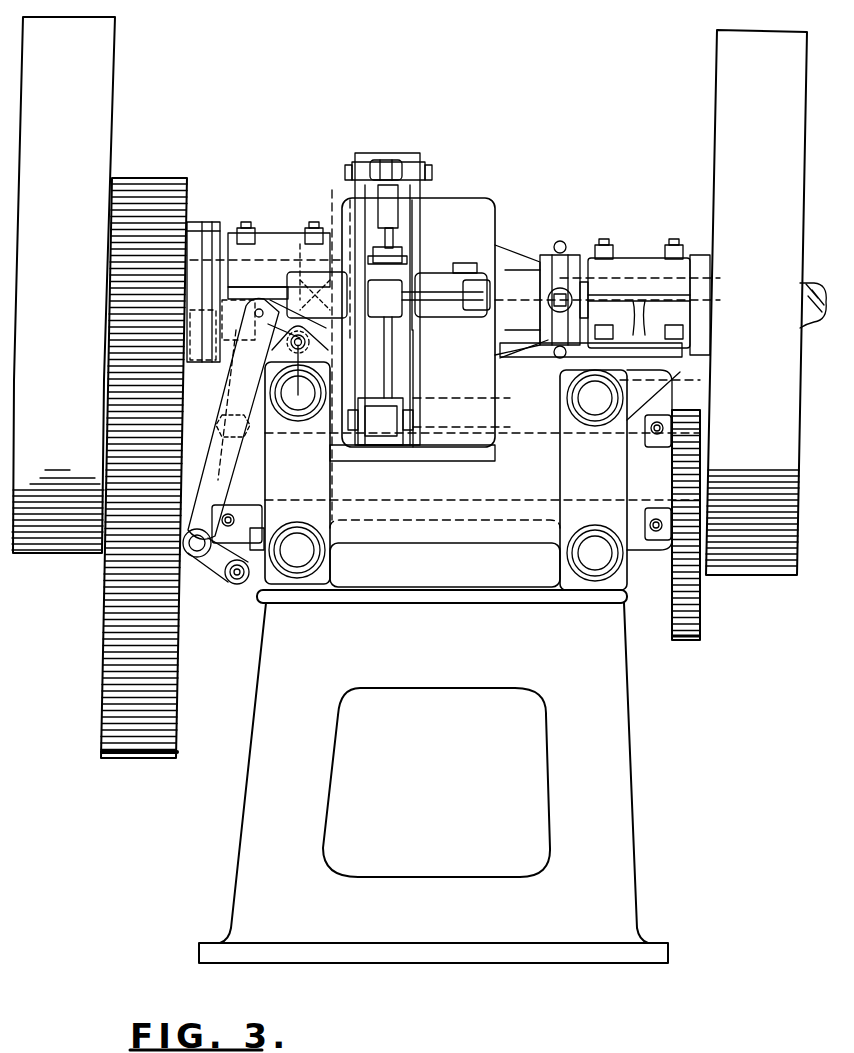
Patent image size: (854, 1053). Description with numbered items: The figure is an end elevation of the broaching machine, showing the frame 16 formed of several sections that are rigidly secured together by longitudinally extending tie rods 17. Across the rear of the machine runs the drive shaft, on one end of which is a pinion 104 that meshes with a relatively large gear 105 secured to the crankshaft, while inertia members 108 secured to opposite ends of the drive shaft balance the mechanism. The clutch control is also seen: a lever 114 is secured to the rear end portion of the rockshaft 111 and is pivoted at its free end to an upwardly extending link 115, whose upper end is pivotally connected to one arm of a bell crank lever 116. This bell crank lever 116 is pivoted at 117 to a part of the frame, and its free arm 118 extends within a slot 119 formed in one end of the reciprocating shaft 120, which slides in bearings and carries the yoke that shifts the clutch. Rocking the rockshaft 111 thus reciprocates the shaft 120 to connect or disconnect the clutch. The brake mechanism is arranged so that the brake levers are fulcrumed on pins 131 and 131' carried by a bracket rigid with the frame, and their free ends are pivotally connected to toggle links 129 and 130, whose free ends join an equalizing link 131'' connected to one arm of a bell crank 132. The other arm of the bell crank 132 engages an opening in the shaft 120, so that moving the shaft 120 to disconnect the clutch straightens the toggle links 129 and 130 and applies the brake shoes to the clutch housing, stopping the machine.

The frame 16 is at (610, 677).
The tie rods 17 is at (576, 395).
The pinion 104 is at (190, 250).
The gear 105 is at (108, 660).
The inertia members 108 is at (99, 82).
The rockshaft 111 is at (240, 588).
The lever 114 is at (188, 630).
The link 115 is at (248, 471).
The bell crank lever 116 is at (285, 304).
The pivot 117 is at (300, 398).
The free arm 118 is at (318, 262).
The slot 119 is at (311, 250).
The reciprocating shaft 120 is at (333, 192).
The toggle link 129 is at (390, 212).
The toggle link 130 is at (384, 378).
The pin 131 is at (401, 302).
The pin 131' is at (405, 400).
The equalizing link 131'' is at (427, 282).
The bell crank 132 is at (423, 296).